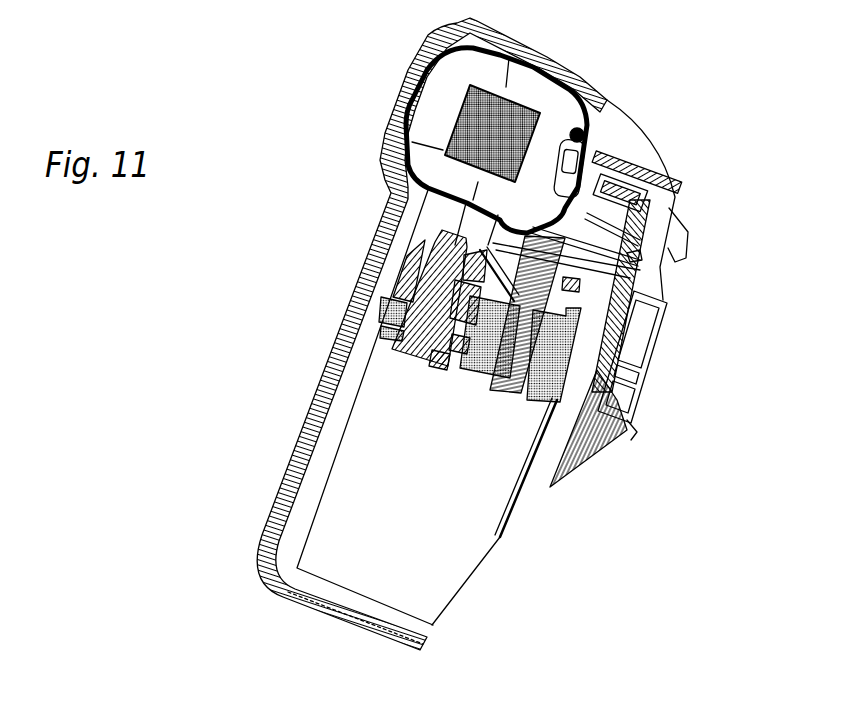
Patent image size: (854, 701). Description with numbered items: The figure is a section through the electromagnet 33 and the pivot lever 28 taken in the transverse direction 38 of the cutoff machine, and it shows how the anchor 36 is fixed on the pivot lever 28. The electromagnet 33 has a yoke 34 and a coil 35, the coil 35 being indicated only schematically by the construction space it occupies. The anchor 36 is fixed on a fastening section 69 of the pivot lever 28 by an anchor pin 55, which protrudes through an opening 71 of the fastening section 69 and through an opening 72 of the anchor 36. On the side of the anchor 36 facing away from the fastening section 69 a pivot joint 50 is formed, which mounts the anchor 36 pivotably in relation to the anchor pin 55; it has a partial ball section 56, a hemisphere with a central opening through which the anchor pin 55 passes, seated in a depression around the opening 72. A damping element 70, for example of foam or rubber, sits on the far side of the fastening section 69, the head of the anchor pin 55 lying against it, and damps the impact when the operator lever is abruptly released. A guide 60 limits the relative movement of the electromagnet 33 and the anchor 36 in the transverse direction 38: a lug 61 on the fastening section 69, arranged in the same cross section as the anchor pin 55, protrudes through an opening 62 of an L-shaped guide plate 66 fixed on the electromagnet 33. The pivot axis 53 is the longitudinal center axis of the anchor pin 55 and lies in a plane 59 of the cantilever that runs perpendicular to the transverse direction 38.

The pivot lever 28 is at (603, 383).
The electromagnet 33 is at (583, 83).
The yoke 34 is at (452, 115).
The coil 35 is at (423, 137).
The anchor 36 is at (397, 270).
The transverse direction 38 is at (273, 203).
The pivot joint 50 is at (583, 333).
The pivot axis 53 is at (335, 407).
The anchor pin 55 is at (425, 362).
The partial ball section 56 is at (412, 245).
The plane 59 is at (400, 387).
The guide 60 is at (640, 255).
The lug 61 is at (596, 311).
The opening 62 is at (580, 288).
The guide plate 66 is at (660, 170).
The fastening section 69 is at (380, 312).
The damping element 70 is at (455, 358).
The opening 71 is at (523, 380).
The opening 72 is at (408, 296).